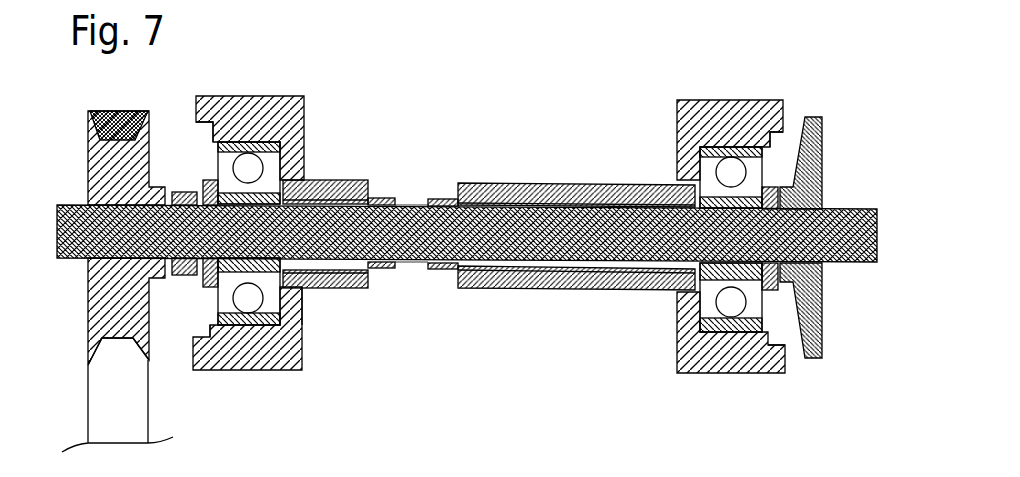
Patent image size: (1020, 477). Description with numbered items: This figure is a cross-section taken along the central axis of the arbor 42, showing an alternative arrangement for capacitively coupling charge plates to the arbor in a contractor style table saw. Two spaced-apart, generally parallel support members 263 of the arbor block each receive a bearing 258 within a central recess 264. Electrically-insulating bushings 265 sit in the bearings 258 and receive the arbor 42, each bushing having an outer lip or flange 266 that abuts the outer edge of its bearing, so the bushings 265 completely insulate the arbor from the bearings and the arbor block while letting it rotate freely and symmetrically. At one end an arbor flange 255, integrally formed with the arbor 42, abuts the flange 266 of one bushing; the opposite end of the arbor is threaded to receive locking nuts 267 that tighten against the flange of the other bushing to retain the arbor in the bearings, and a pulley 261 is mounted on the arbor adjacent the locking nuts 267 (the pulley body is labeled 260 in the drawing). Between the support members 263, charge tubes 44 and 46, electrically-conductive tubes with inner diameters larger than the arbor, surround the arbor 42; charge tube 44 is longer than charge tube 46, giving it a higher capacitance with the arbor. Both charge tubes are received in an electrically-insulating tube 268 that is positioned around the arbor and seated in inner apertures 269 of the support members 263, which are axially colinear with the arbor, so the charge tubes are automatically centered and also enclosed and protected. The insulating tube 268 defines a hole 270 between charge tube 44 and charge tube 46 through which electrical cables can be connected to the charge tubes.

The arbor 42 is at (838, 265).
The charge tube 44 is at (443, 200).
The charge tube 46 is at (378, 198).
The arbor flange 255 is at (822, 343).
The bearings 258 is at (273, 165).
The pulley 260 is at (133, 393).
The pulley 261 is at (142, 332).
The support members 263 is at (238, 100).
The central recesses 264 is at (205, 140).
The electrically-insulating bushings 265 is at (302, 305).
The outer lip or flange 266 is at (820, 152).
The locking nuts 267 is at (195, 192).
The insulating tube 268 is at (490, 182).
The inner apertures 269 is at (303, 181).
The hole 270 is at (413, 192).